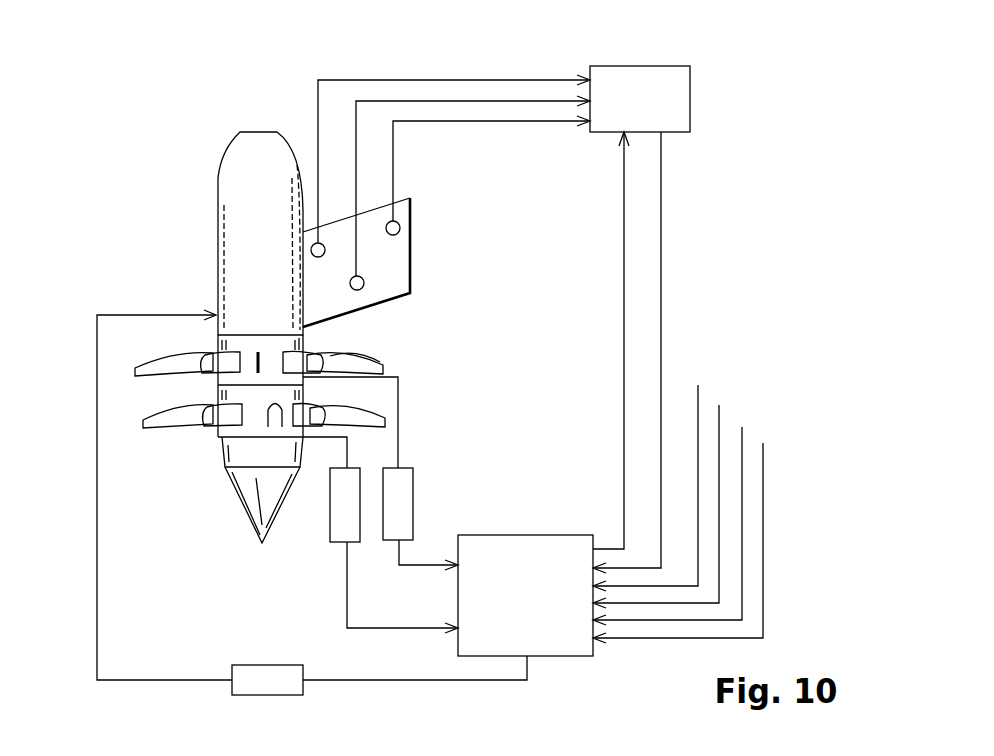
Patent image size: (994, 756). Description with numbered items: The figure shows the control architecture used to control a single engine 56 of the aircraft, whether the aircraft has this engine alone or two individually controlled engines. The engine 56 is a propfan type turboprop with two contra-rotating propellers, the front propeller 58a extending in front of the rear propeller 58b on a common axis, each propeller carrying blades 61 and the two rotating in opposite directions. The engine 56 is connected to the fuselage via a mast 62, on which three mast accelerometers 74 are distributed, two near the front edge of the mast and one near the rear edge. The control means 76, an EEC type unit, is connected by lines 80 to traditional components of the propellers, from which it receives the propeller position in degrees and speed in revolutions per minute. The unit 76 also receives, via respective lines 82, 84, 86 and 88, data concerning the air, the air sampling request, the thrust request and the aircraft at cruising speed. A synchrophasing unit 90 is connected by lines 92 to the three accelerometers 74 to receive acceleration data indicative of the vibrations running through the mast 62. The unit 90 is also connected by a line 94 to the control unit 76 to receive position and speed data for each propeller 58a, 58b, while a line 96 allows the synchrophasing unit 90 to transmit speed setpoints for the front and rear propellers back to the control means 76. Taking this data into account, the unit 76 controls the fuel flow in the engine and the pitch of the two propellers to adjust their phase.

The engine 56 is at (228, 166).
The front propeller 58a is at (144, 372).
The rear propeller 58b is at (158, 428).
The blades 61 is at (363, 353).
The mast 62 is at (412, 225).
The mast accelerometers 74 is at (364, 283).
The control means 76 is at (565, 543).
The lines 80 is at (408, 503).
The line 82 is at (698, 450).
The line 84 is at (720, 487).
The line 86 is at (742, 535).
The line 88 is at (765, 582).
The synchrophasing unit 90 is at (648, 78).
The lines 92 is at (354, 124).
The line 94 is at (623, 210).
The line 96 is at (661, 262).